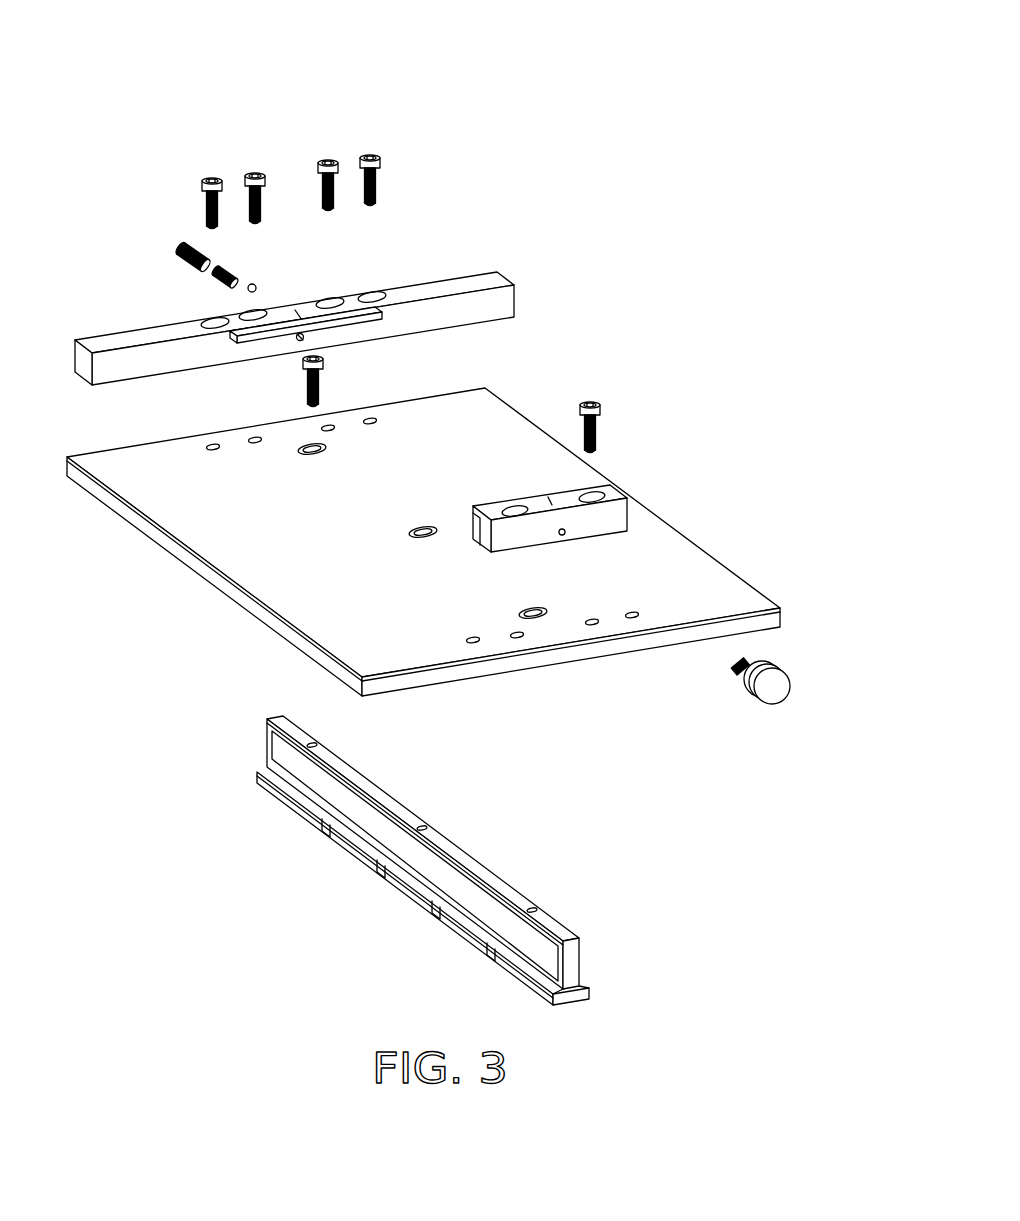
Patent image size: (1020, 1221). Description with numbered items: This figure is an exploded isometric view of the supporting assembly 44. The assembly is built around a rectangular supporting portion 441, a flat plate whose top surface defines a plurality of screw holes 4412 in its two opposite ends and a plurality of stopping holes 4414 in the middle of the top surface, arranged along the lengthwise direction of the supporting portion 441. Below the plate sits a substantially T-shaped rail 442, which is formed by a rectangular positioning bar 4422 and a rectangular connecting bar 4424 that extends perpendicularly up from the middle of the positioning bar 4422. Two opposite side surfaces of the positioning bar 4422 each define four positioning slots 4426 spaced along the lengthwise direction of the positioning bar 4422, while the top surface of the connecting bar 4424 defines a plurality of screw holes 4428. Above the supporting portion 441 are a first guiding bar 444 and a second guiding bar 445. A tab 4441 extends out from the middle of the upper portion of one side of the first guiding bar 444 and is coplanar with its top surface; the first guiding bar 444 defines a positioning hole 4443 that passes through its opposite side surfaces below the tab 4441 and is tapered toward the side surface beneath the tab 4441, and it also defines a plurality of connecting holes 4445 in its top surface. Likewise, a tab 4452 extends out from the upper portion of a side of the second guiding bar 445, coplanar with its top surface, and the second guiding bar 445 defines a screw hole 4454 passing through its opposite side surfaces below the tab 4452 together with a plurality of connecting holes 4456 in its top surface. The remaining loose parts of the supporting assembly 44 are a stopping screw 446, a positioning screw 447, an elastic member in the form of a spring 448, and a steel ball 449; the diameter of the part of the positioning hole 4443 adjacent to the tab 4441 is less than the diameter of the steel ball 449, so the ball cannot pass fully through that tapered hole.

The supporting assembly 44 is at (283, 66).
The supporting portion 441 is at (705, 575).
The screw holes 4412 is at (208, 448).
The stopping holes 4414 is at (310, 453).
The rail 442 is at (600, 892).
The positioning bar 4422 is at (583, 993).
The connecting bar 4424 is at (570, 957).
The positioning slots 4426 is at (483, 948).
The screw holes 4428 is at (533, 907).
The first guiding bar 444 is at (478, 280).
The tab 4441 is at (360, 318).
The positioning hole 4443 is at (298, 342).
The connecting holes 4445 is at (370, 293).
The second guiding bar 445 is at (615, 517).
The tab 4452 is at (592, 490).
The screw hole 4454 is at (565, 533).
The connecting holes 4456 is at (600, 498).
The stopping screw 446 is at (772, 690).
The positioning screw 447 is at (185, 265).
The spring 448 is at (231, 271).
The steel ball 449 is at (258, 287).